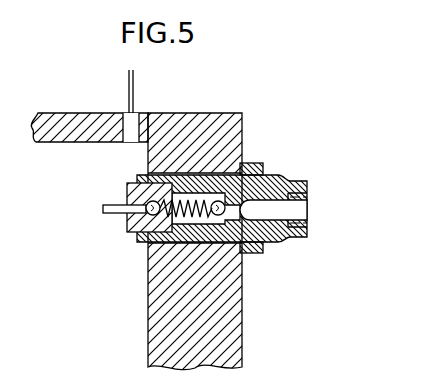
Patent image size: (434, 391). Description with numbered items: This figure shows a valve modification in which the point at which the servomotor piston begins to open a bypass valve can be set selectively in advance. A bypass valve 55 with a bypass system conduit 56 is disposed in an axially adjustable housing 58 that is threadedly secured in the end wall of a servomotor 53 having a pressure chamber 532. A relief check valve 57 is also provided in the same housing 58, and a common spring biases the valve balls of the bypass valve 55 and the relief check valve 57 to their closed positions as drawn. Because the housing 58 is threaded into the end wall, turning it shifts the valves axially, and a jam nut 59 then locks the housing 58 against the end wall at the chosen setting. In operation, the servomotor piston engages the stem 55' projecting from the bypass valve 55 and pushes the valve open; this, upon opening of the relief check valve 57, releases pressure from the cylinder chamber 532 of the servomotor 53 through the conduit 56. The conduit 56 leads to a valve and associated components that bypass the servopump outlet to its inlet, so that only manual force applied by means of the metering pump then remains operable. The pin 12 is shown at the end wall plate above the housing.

The pin 12 is at (126, 107).
The servomotor 53 is at (218, 293).
The pressure chamber 532 is at (128, 337).
The bypass valve 55 is at (114, 220).
The stem 55' is at (98, 198).
The bypass system conduit 56 is at (270, 212).
The relief check valve 57 is at (240, 200).
The axially adjustable housing 58 is at (148, 265).
The jam nut 59 is at (263, 253).